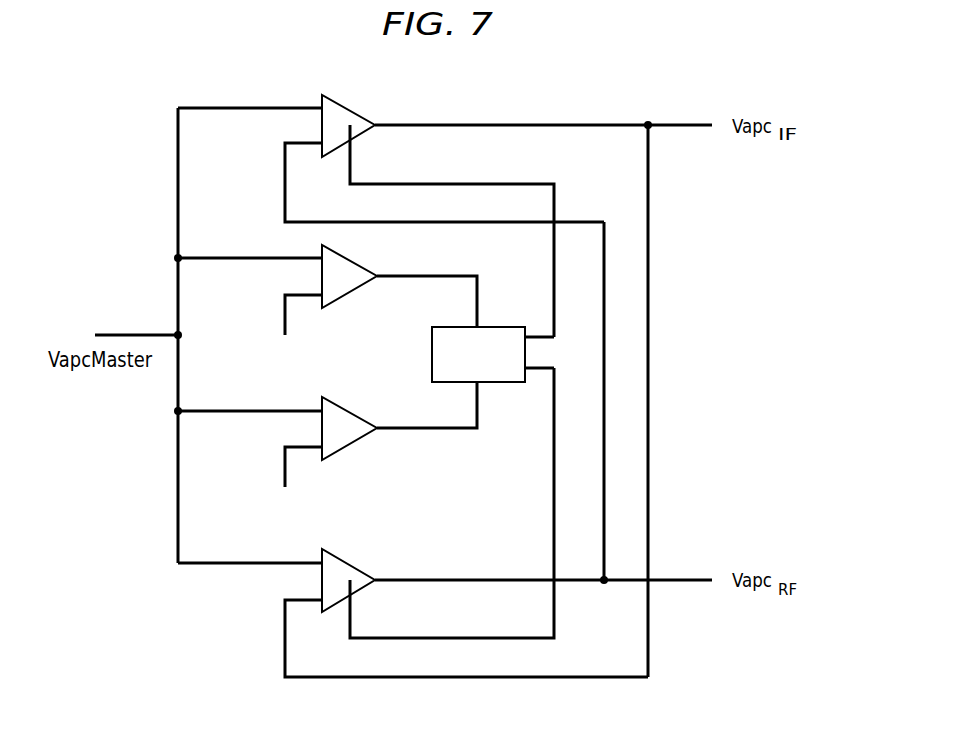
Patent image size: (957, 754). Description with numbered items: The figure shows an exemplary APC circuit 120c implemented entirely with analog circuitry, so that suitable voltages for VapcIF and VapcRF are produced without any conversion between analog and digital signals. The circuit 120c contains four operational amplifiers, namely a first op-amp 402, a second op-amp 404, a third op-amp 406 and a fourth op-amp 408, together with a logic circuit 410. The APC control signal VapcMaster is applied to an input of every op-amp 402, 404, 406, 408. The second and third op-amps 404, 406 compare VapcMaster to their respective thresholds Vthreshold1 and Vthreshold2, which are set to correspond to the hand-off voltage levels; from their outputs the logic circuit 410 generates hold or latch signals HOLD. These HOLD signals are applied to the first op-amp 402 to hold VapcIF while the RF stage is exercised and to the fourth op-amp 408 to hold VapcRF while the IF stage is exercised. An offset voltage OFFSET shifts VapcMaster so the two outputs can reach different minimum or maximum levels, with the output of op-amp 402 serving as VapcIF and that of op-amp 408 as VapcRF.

The APC circuit 120c is at (132, 207).
The first op-amp 402 is at (348, 105).
The second op-amp 404 is at (358, 262).
The third op-amp 406 is at (352, 413).
The fourth op-amp 408 is at (352, 565).
The logic circuit 410 is at (495, 327).